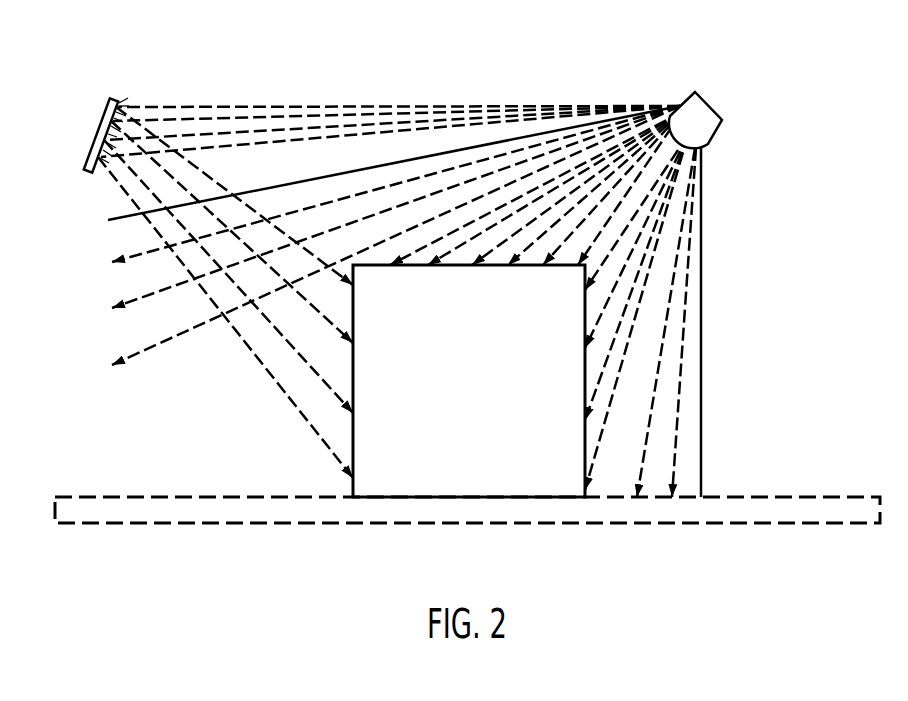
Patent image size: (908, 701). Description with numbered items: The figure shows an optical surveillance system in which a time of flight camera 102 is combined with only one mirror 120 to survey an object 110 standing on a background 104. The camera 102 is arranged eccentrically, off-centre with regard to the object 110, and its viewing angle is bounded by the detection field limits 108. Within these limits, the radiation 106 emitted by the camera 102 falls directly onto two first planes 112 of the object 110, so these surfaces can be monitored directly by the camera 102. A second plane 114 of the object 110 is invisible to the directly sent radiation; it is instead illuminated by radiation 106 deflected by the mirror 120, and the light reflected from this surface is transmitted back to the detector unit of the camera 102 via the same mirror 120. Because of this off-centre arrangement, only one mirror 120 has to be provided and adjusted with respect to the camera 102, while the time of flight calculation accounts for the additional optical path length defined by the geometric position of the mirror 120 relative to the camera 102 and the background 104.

The TOF camera 102 is at (709, 93).
The background 104 is at (840, 524).
The radiation 106 is at (684, 208).
The detection field limits 108 is at (110, 207).
The object 110 is at (415, 432).
The first planes 112 is at (447, 268).
The second plane 114 is at (343, 368).
The mirror 120 is at (111, 93).